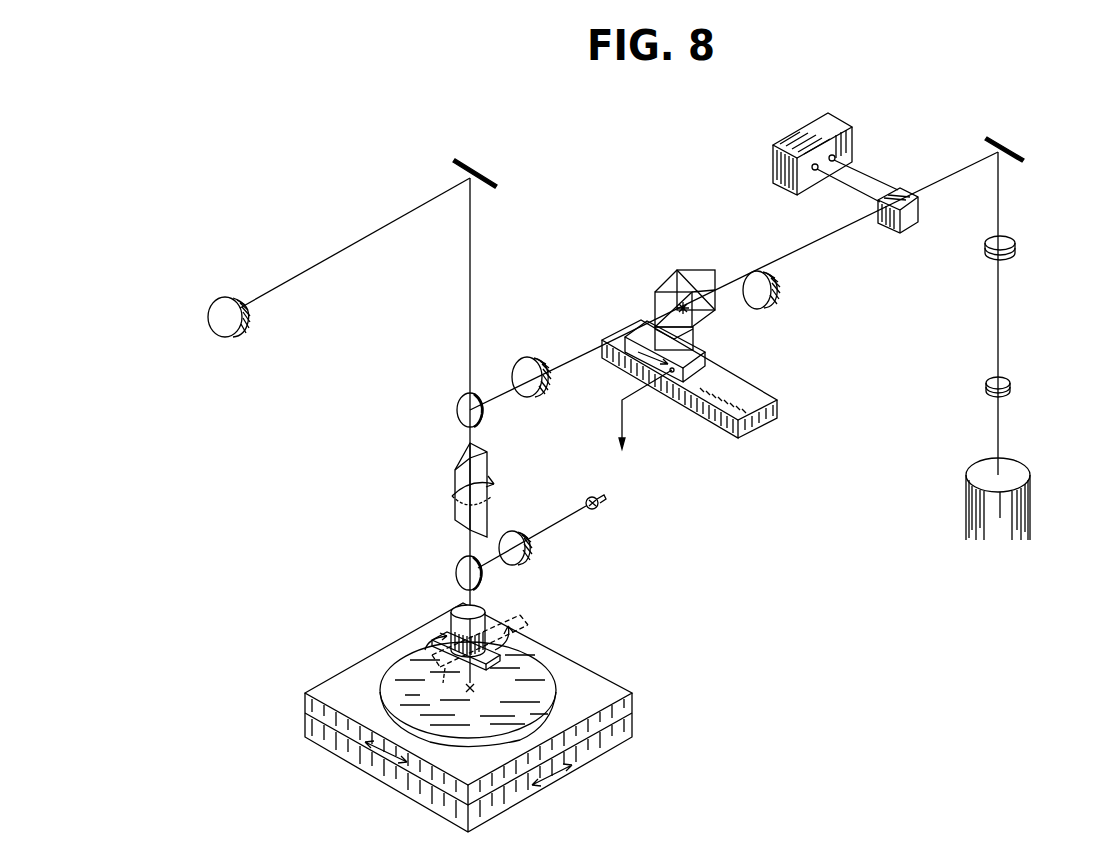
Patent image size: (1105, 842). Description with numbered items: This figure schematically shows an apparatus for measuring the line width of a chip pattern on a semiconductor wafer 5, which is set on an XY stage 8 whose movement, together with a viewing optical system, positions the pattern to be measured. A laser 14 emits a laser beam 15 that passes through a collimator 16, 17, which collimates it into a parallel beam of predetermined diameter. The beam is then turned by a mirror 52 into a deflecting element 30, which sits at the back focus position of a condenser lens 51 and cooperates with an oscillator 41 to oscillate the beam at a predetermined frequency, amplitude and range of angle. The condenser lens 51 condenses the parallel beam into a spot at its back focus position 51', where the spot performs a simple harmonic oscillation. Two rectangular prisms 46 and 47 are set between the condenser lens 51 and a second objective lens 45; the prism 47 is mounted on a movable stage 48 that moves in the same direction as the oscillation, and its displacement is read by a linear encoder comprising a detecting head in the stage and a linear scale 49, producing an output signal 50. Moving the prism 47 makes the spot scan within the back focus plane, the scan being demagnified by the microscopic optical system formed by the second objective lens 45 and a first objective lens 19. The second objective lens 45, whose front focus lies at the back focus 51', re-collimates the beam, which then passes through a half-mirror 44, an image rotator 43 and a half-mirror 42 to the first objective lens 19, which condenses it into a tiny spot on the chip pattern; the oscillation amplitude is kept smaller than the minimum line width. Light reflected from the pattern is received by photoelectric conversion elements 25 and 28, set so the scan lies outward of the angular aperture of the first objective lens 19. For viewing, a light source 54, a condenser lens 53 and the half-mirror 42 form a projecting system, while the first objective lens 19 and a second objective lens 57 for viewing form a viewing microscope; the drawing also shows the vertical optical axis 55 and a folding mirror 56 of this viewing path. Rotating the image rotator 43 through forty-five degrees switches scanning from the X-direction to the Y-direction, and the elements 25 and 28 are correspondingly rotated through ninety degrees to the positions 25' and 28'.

The semiconductor wafer 5 is at (418, 668).
The XY stage 8 is at (305, 696).
The laser 14 is at (1030, 511).
The laser beam 15 is at (999, 430).
The collimator 16 is at (1008, 386).
The collimator 17 is at (1012, 248).
The first objective lens 19 is at (484, 610).
The photoelectric conversion element 25 is at (515, 684).
The position of photoelectric conversion element 25' is at (506, 635).
The photoelectric conversion element 28 is at (450, 631).
The position of photoelectric conversion element 28' is at (443, 693).
The deflecting element 30 is at (906, 232).
The oscillator 41 is at (836, 124).
The half-mirror 42 is at (458, 573).
The image rotator 43 is at (456, 476).
The half-mirror 44 is at (458, 408).
The second objective lens 45 is at (514, 360).
The rectangular prism 46 is at (690, 270).
The rectangular prism 47 is at (693, 336).
The movable stage 48 is at (705, 356).
The linear scale 49 is at (758, 388).
The output signal 50 is at (622, 424).
The condenser lens 51 is at (734, 281).
The back focus position 51' is at (651, 280).
The mirror 52 is at (1010, 148).
The condenser lens 53 is at (526, 549).
The light source for viewing 54 is at (600, 506).
The optical axis 55 is at (469, 288).
The mirror 56 is at (486, 178).
The second objective lens for viewing 57 is at (222, 300).